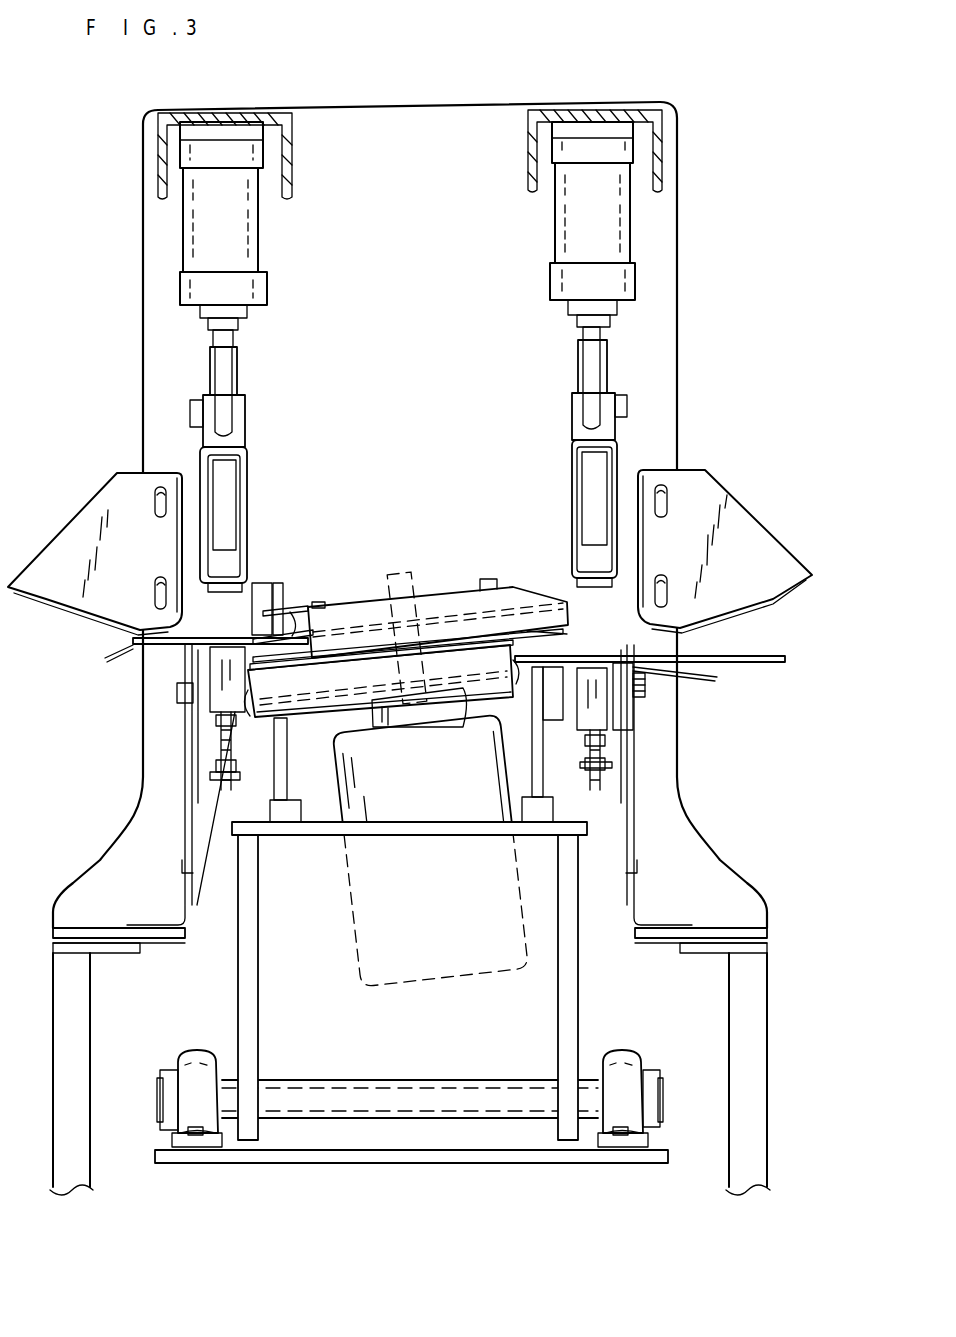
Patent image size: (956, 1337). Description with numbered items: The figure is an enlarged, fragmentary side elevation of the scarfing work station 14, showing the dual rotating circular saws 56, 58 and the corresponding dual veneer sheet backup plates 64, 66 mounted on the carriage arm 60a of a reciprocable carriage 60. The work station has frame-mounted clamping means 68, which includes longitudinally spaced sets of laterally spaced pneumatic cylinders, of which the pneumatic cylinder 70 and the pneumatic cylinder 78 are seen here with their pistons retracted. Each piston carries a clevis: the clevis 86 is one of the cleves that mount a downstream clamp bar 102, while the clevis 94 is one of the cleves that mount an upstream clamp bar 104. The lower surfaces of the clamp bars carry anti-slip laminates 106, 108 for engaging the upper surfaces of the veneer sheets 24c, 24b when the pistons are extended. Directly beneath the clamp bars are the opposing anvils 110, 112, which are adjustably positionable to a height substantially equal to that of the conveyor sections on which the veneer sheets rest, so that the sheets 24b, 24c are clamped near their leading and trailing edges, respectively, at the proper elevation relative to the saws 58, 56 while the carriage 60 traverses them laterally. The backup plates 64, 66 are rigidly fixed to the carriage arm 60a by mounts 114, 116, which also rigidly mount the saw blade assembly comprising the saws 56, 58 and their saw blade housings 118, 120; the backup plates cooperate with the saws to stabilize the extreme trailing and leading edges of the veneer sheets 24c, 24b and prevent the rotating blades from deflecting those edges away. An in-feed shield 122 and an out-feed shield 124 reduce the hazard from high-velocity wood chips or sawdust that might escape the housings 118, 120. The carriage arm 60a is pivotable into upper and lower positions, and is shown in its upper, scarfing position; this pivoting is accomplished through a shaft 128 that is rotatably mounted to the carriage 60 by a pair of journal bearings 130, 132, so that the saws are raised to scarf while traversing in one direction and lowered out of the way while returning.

The scarfing work station 14 is at (479, 95).
The pneumatic cylinder 78 is at (268, 230).
The pneumatic cylinder 70 is at (553, 232).
The clamping means 68 is at (262, 396).
The clevis 94 is at (247, 417).
The clevis 86 is at (612, 398).
The downstream clamp bar 102 is at (622, 532).
The upstream clamp bar 104 is at (217, 519).
The backup plate 66 is at (240, 575).
The anti-slip laminate 108 is at (205, 590).
The anti-slip laminate 106 is at (600, 590).
The out-feed shield 124 is at (90, 502).
The in-feed shield 122 is at (752, 513).
The veneer sheet 24b is at (135, 641).
The veneer sheet 24c is at (740, 657).
The circular saw 58 is at (292, 622).
The saw blade housing 120 is at (471, 582).
The circular saw 56 is at (512, 682).
The saw blade housing 118 is at (458, 722).
The anvil 112 is at (257, 718).
The anvil 110 is at (646, 726).
The backup plate 64 is at (640, 683).
The mount 116 is at (287, 750).
The mount 114 is at (545, 760).
The carriage 60 is at (428, 992).
The carriage arm 60a is at (260, 848).
The shaft 128 is at (323, 1080).
The journal bearing 132 is at (191, 1050).
The journal bearing 130 is at (641, 1050).